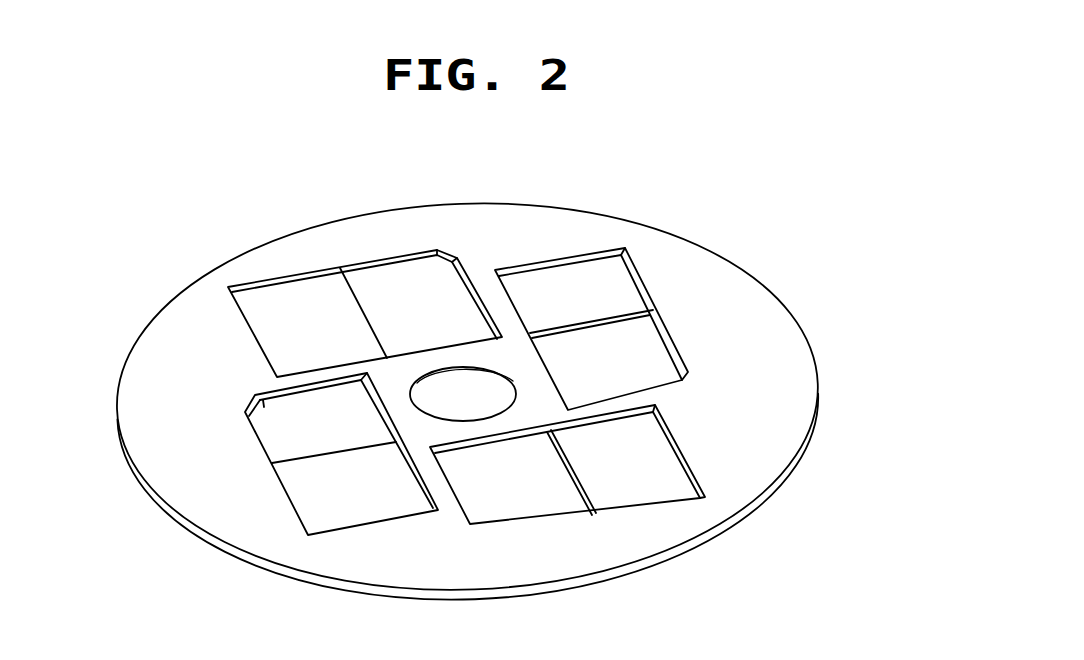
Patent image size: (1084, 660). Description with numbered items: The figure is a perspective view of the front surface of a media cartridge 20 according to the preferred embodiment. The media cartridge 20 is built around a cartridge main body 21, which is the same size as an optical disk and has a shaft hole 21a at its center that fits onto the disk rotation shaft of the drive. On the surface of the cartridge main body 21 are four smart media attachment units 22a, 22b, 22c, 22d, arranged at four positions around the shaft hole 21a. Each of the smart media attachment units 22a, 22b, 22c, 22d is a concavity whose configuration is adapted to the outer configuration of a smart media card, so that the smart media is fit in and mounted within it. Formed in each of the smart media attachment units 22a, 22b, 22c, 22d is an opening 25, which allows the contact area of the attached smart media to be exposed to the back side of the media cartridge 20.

The media cartridge 20 is at (660, 205).
The cartridge main body 21 is at (778, 332).
The shaft hole 21a is at (442, 395).
The smart media attachment unit 22a is at (257, 393).
The smart media attachment unit 22b is at (443, 243).
The smart media attachment unit 22c is at (703, 378).
The smart media attachment unit 22d is at (706, 497).
The opening 25 is at (447, 279).